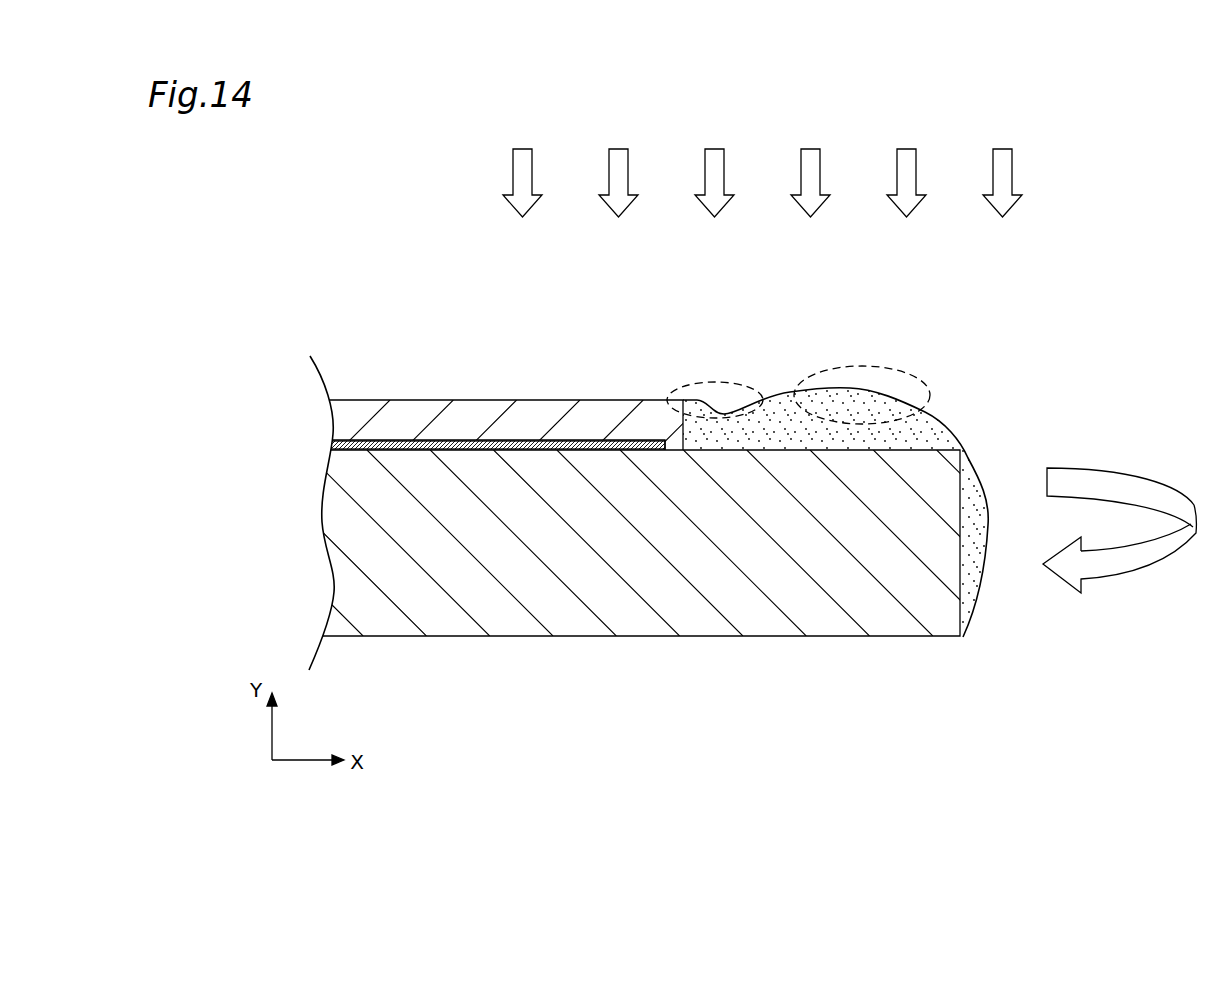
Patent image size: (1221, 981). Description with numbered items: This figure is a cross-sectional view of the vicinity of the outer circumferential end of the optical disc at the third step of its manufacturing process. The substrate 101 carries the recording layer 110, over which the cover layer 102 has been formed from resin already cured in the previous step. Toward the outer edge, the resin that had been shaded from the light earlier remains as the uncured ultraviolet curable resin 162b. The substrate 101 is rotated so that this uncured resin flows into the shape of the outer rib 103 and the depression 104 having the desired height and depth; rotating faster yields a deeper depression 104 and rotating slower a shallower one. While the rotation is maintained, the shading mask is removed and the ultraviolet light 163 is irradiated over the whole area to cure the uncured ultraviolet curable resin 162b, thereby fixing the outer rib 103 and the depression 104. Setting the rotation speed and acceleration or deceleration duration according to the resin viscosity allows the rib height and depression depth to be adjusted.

The substrate 101 is at (539, 618).
The cover layer 102 is at (513, 420).
The recording layer 110 is at (433, 444).
The outer rib 103 is at (858, 365).
The depression 104 is at (715, 383).
The uncured ultraviolet curable resin 162b is at (937, 432).
The ultraviolet light 163 is at (1046, 135).